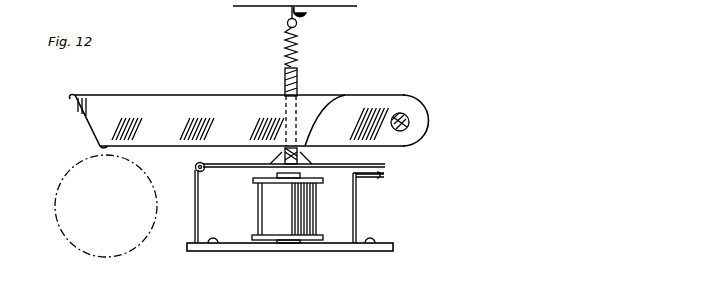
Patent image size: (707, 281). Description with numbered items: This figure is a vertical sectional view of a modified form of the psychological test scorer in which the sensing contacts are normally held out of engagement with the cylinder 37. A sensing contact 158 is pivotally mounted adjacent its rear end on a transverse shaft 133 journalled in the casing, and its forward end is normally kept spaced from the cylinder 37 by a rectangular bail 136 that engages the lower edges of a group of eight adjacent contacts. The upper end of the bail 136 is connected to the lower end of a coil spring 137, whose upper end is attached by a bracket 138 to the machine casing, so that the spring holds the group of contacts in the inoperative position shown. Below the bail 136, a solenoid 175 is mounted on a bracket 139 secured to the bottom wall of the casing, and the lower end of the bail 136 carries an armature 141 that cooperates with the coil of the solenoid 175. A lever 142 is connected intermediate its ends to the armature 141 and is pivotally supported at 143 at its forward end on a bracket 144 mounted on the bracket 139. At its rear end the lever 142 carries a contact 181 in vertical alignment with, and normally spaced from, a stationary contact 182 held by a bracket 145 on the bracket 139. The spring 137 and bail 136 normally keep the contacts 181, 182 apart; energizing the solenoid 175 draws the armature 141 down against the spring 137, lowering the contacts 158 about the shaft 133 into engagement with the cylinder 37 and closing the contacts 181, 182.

The cylinder 37 is at (58, 204).
The shaft 133 is at (408, 118).
The bail 136 is at (299, 80).
The coil spring 137 is at (299, 41).
The bracket 138 is at (288, 13).
The bracket 139 is at (338, 251).
The armature 141 is at (343, 106).
The lever 142 is at (218, 166).
The pivot 143 is at (196, 165).
The bracket 144 is at (195, 196).
The bracket 145 is at (358, 213).
The sensing contact 158 is at (220, 95).
The solenoid 175 is at (270, 207).
The contact 181 is at (385, 163).
The stationary contact 182 is at (386, 178).